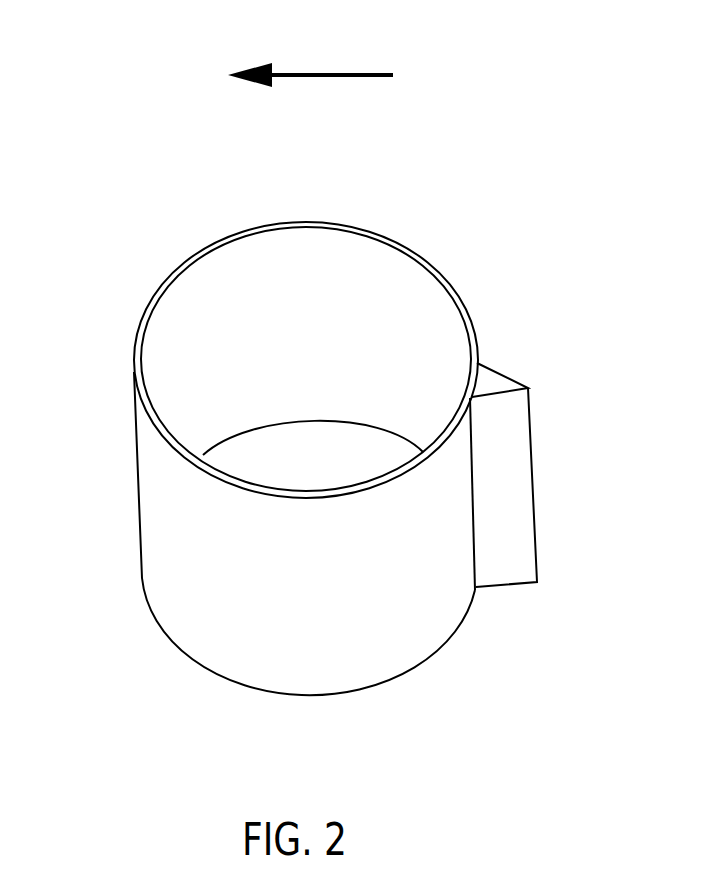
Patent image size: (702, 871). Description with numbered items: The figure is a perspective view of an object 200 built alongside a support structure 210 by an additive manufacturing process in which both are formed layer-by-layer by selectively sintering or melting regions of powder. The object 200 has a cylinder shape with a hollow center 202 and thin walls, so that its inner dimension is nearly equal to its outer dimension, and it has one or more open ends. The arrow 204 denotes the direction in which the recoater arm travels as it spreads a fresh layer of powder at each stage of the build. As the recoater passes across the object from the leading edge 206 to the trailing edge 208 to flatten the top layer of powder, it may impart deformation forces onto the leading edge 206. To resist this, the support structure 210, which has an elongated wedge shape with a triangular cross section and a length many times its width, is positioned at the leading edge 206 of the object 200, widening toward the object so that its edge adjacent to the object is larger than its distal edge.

The object 200 is at (150, 240).
The hollow center 202 is at (353, 368).
The arrow 204 is at (317, 73).
The leading edge 206 is at (473, 592).
The trailing edge 208 is at (142, 580).
The support structure 210 is at (524, 368).